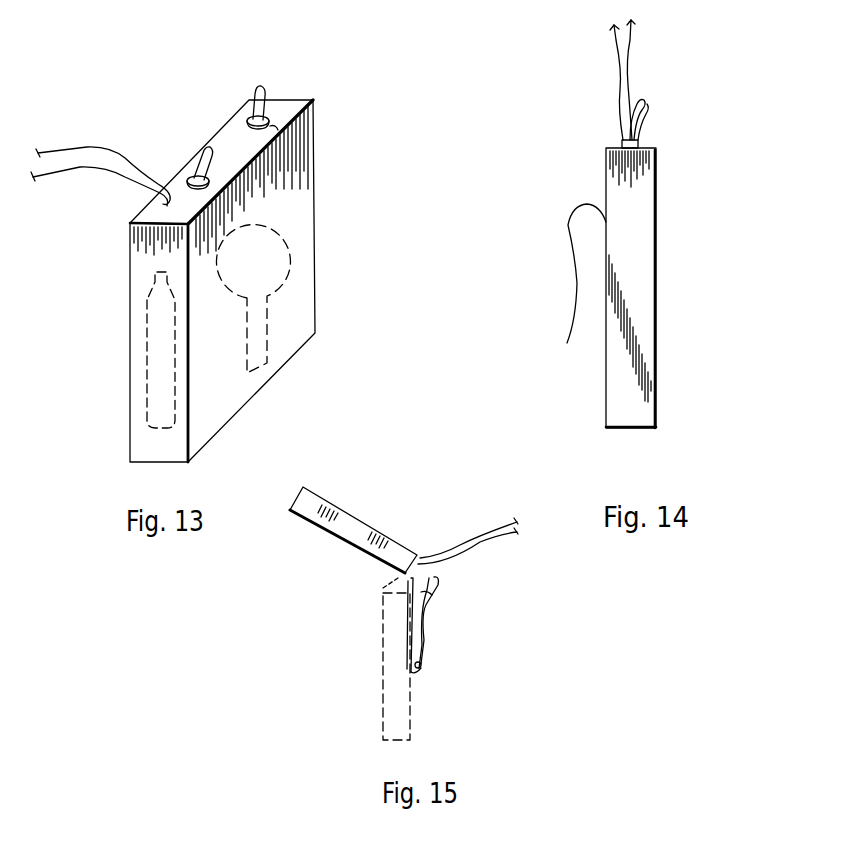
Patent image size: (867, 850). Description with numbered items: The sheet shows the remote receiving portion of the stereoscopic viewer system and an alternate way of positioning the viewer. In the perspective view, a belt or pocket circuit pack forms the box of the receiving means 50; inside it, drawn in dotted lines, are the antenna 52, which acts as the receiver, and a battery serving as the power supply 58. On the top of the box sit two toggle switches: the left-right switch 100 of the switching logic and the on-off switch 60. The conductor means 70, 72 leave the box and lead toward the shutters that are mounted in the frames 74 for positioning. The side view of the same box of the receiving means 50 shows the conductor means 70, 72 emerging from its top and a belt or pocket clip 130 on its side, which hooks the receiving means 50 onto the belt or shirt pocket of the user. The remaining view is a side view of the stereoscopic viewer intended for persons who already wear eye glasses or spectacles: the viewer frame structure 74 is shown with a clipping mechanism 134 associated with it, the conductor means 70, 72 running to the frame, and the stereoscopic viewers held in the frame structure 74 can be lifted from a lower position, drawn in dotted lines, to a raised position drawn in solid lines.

In FIG. 13, the receiving means 50 is at (314, 152).
In FIG. 13, the antenna 52 is at (275, 312).
In FIG. 13, the power supply 58 is at (148, 318).
In FIG. 13, the on-off switch 60 is at (192, 163).
In FIG. 13, the conductor means 70 is at (87, 147).
In FIG. 14, the conductor means 70 is at (627, 80).
In FIG. 15, the conductor means 70 is at (490, 527).
In FIG. 13, the conductor means 72 is at (42, 193).
In FIG. 14, the conductor means 72 is at (614, 82).
In FIG. 15, the conductor means 72 is at (489, 546).
In FIG. 13, the left-right switch 100 is at (262, 90).
In FIG. 14, the belt or pocket clip 130 is at (572, 290).
In FIG. 15, the frame structure 74 is at (316, 525).
In FIG. 15, the clipping mechanism 134 is at (437, 636).